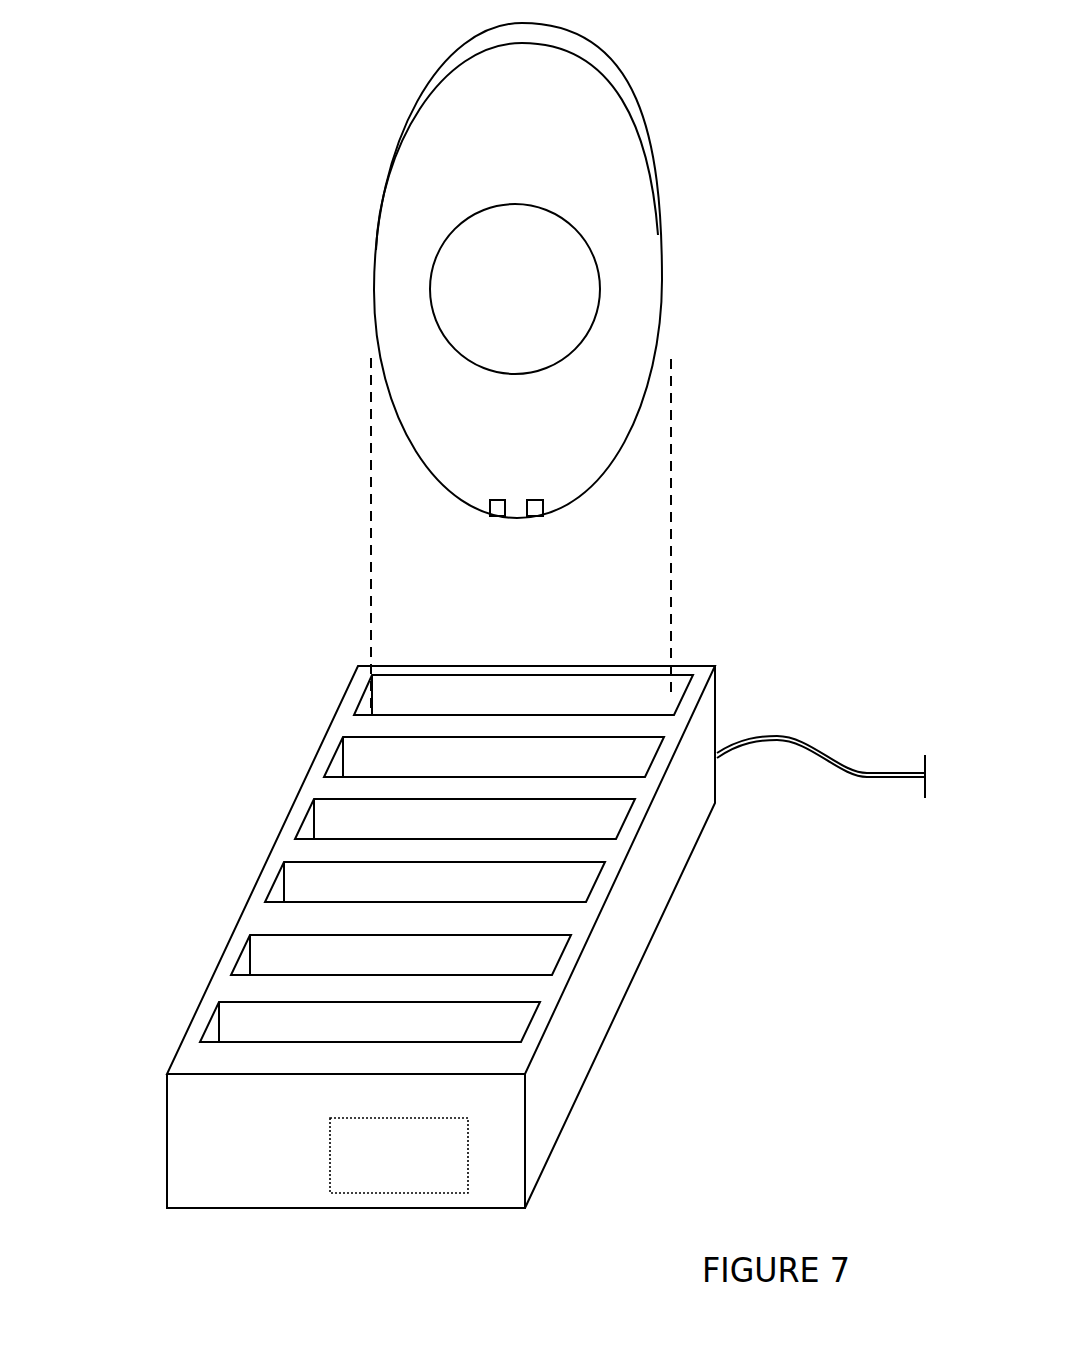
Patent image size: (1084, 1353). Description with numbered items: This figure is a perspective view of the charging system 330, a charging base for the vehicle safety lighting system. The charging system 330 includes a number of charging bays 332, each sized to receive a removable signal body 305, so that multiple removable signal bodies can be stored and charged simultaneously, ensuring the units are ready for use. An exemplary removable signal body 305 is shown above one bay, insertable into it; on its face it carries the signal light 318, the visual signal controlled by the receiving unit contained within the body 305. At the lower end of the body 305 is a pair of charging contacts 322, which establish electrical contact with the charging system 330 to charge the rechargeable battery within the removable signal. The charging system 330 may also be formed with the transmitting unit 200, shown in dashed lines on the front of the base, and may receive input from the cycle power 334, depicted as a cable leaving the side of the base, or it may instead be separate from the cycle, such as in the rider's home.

The removable signal body 305 is at (407, 110).
The signal light 318 is at (537, 317).
The charging contacts 322 is at (497, 515).
The charging system 330 is at (582, 1002).
The charging bays 332 is at (242, 1030).
The cycle power 334 is at (807, 738).
The transmitting unit 200 is at (390, 1148).